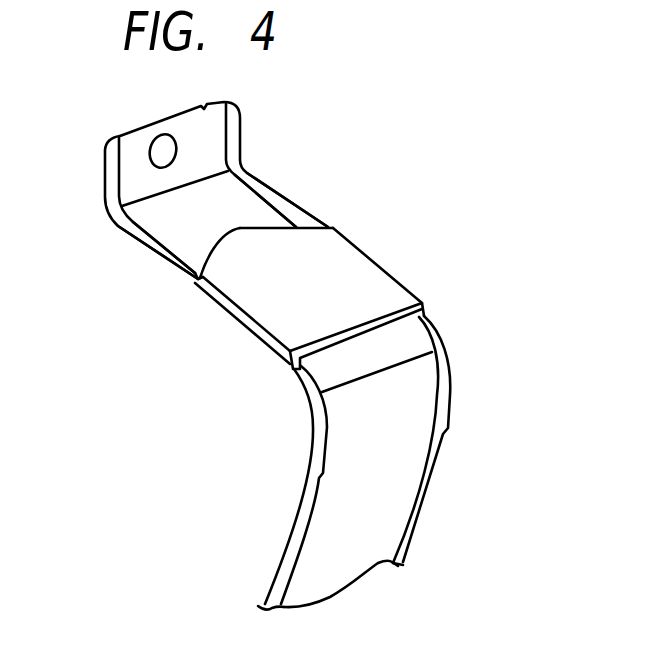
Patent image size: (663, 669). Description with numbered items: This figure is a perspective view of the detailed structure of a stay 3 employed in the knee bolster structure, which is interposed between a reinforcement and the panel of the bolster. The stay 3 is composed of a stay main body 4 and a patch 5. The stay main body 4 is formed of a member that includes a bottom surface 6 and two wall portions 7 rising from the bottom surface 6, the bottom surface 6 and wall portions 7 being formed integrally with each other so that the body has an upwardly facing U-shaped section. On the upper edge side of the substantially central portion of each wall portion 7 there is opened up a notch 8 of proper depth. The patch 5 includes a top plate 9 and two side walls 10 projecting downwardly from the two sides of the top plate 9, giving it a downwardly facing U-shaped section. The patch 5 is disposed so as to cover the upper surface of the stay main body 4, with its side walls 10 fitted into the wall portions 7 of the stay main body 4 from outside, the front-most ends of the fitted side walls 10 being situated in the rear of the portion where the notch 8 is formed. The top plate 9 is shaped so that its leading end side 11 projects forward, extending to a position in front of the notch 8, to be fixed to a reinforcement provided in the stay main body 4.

The stay 3 is at (459, 375).
The stay main body 4 is at (392, 467).
The patch 5 is at (366, 281).
The bottom surface 6 is at (176, 225).
The wall portion 7 is at (165, 251).
The notch 8 is at (197, 282).
The top plate 9 is at (310, 257).
The side wall 10 is at (242, 320).
The leading end side 11 is at (239, 247).